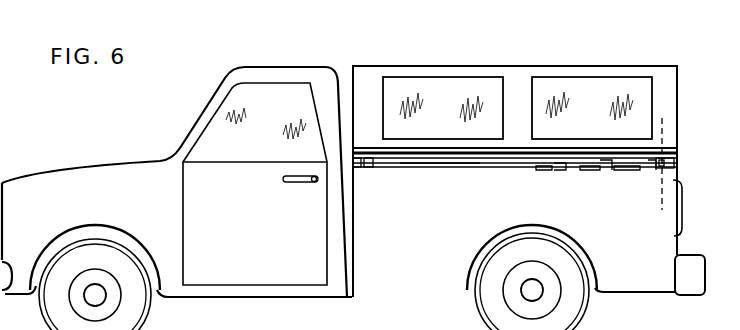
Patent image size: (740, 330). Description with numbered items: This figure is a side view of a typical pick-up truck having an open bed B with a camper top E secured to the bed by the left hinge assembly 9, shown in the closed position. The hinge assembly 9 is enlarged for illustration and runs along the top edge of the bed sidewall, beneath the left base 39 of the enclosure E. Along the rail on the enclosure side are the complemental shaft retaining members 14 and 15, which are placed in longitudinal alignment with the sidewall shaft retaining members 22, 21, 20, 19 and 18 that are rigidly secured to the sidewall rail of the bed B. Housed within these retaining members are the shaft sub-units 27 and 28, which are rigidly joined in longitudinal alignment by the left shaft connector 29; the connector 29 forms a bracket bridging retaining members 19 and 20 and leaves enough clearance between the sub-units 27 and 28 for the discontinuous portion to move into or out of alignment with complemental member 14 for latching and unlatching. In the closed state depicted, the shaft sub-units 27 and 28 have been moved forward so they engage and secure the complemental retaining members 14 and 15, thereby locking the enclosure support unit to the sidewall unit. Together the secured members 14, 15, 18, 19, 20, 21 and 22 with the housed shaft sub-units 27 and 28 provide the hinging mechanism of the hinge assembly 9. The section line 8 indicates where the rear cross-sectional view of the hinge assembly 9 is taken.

The section line 8— 8 is at (667, 126).
The left hinge assembly 9 is at (455, 165).
The complemental retaining member 14 is at (605, 170).
The complemental retaining member 15 is at (369, 168).
The sidewall shaft retaining member 18 is at (678, 166).
The sidewall shaft retaining member 19 is at (620, 168).
The sidewall shaft retaining member 20 is at (588, 170).
The sidewall shaft retaining member 21 is at (444, 166).
The sidewall shaft retaining member 22 is at (356, 168).
The shaft sub-unit 27 is at (648, 170).
The shaft sub-unit 28 is at (544, 172).
The left shaft connector 29 is at (558, 171).
The left base of enclosure 39 is at (401, 203).
The camper top E is at (548, 66).
The open bed B is at (496, 206).